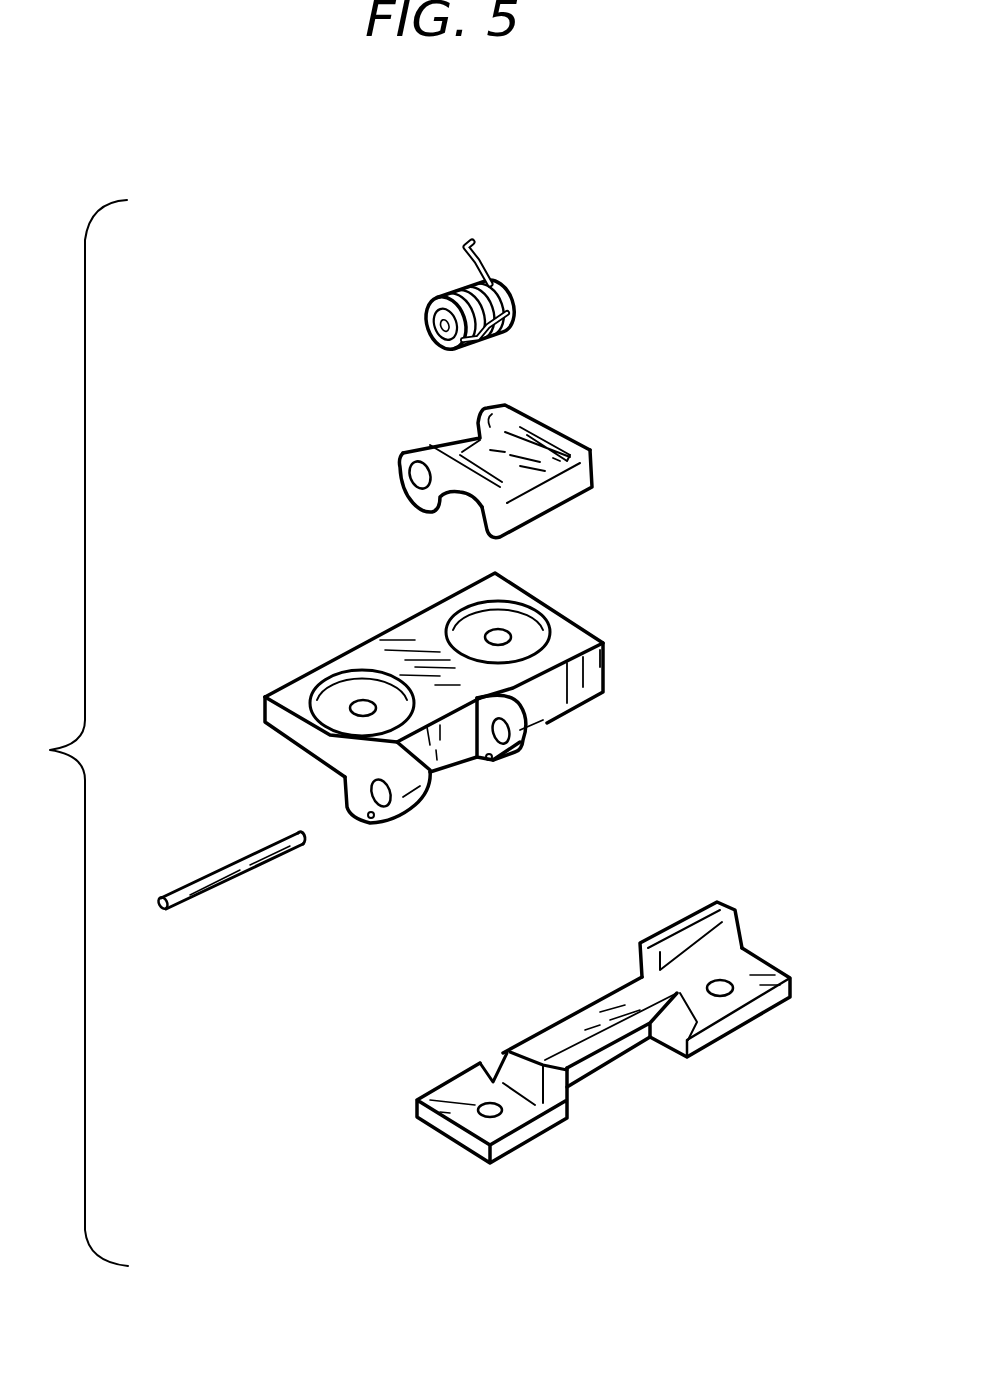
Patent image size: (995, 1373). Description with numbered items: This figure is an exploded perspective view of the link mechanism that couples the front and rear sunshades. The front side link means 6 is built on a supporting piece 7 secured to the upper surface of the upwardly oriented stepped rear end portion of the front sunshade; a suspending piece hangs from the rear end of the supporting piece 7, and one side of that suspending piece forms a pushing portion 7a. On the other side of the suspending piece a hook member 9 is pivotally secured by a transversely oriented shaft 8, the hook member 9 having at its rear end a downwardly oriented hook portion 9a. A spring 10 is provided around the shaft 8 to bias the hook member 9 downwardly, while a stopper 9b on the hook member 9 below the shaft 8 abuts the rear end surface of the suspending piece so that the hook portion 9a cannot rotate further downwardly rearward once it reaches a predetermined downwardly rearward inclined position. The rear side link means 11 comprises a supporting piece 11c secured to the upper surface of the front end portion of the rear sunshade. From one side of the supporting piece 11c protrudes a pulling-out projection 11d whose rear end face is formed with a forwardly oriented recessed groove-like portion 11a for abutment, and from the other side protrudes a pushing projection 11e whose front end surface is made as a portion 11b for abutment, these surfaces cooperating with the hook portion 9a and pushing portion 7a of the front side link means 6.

The front side link means 6 is at (333, 581).
The supporting piece 7 is at (468, 698).
The pushing portion 7a is at (603, 682).
The shaft 8 is at (232, 875).
The hook member 9 is at (507, 476).
The hook portion 9a is at (537, 503).
The stopper 9b is at (432, 513).
The spring 10 is at (507, 311).
The rear side link means 11 is at (607, 1023).
The recessed groove-like portion for abutment 11a is at (583, 1062).
The portion for abutment 11b is at (657, 923).
The supporting piece 11c is at (440, 1137).
The pulling-out projection 11d is at (572, 1032).
The pushing projection 11e is at (725, 908).